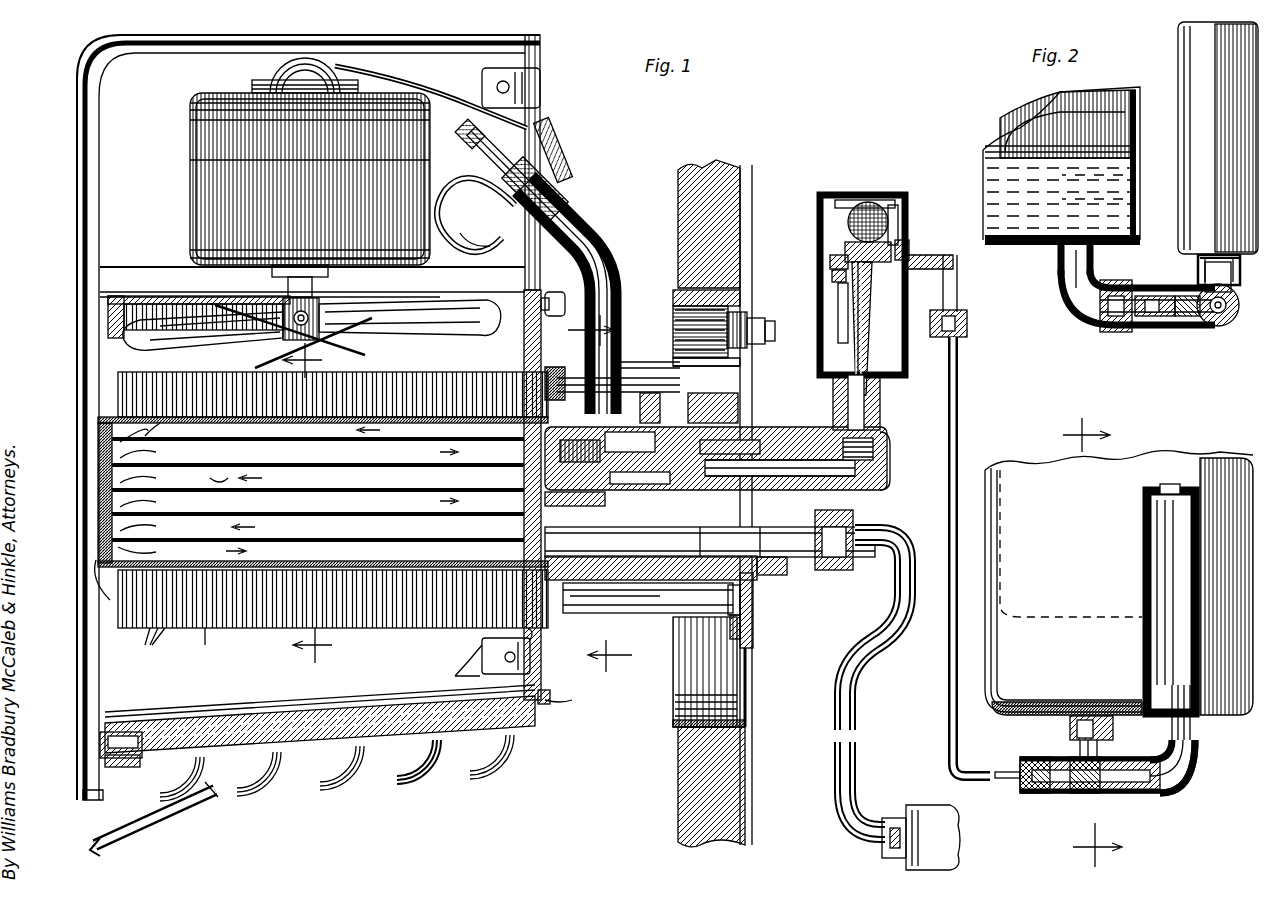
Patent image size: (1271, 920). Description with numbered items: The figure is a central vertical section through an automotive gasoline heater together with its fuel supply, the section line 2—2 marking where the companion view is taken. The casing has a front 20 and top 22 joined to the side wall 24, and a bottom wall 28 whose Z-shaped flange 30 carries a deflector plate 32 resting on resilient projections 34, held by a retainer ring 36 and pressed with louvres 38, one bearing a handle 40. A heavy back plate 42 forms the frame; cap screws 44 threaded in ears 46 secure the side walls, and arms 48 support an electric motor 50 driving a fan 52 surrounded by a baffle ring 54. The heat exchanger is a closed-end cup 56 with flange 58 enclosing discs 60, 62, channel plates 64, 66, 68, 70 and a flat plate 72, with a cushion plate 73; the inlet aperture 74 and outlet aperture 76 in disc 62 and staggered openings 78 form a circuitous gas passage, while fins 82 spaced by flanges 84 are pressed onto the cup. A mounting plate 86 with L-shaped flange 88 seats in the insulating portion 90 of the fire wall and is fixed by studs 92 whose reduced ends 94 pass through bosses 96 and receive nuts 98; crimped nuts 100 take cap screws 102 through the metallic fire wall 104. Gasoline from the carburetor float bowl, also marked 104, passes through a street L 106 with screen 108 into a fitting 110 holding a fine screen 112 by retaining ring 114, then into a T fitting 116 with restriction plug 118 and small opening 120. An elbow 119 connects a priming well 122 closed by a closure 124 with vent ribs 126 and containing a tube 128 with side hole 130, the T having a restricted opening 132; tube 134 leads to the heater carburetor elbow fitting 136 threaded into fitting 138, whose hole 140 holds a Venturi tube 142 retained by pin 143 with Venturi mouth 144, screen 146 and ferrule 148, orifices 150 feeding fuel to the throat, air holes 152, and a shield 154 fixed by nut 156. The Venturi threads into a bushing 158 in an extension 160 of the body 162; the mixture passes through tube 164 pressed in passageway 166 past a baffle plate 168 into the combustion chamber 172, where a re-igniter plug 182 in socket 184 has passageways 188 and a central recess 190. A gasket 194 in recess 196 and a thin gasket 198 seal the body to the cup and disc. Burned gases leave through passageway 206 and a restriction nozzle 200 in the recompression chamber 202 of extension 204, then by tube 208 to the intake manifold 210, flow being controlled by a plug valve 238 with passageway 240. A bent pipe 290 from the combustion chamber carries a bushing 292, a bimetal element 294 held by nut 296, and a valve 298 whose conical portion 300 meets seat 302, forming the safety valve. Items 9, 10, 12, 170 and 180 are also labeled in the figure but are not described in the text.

In FIG. 1, the section line 9 is at (605, 493).
In FIG. 1, the air flow direction 10 is at (320, 503).
In FIG. 1, the housing wall 12 is at (543, 686).
In FIG. 1, the front 20 is at (100, 482).
In FIG. 1, the top 22 is at (183, 45).
In FIG. 1, the side wall 24 is at (82, 590).
In FIG. 1, the bottom wall 28 is at (558, 710).
In FIG. 1, the Z-shaped flange 30 is at (126, 762).
In FIG. 1, the circular deflector plate 32 is at (160, 732).
In FIG. 1, the resilient projections 34 is at (318, 696).
In FIG. 1, the retainer ring 36 is at (112, 734).
In FIG. 1, the louvres 38 is at (367, 790).
In FIG. 1, the handle 40 is at (165, 828).
In FIG. 1, the back plate 42 is at (545, 367).
In FIG. 1, the cap screws 44 is at (465, 100).
In FIG. 1, the ears 46 is at (540, 74).
In FIG. 1, the arms 48 is at (312, 282).
In FIG. 1, the electric motor 50 is at (210, 216).
In FIG. 1, the fan 52 is at (158, 305).
In FIG. 1, the flanged baffle ring 54 is at (112, 298).
In FIG. 1, the closed end tube 56 is at (114, 432).
In FIG. 1, the flange 58 is at (526, 630).
In FIG. 1, the disc 60 is at (210, 527).
In FIG. 1, the disc 62 is at (510, 475).
In FIG. 1, the channel-shaped plate 64 is at (330, 431).
In FIG. 1, the channel-shaped plate 66 is at (291, 454).
In FIG. 1, the channel-shaped plate 68 is at (291, 503).
In FIG. 1, the channel-shaped plate 70 is at (291, 527).
In FIG. 1, the flat plate 72 is at (270, 478).
In FIG. 1, the cushion plate 73 is at (197, 478).
In FIG. 1, the inlet aperture 74 is at (508, 427).
In FIG. 1, the outlet aperture 76 is at (512, 547).
In FIG. 1, the openings 78 is at (114, 455).
In FIG. 1, the heat radiating fins 82 is at (158, 542).
In FIG. 1, the flanges 84 is at (215, 542).
In FIG. 1, the mounting plate 86 is at (752, 660).
In FIG. 1, the peripheral L-shaped flange 88 is at (673, 288).
In FIG. 1, the sound and heat insulating portion 90 is at (673, 270).
In FIG. 1, the studs 92 is at (700, 622).
In FIG. 1, the threaded ends 94 is at (752, 622).
In FIG. 1, the bosses 96 is at (752, 640).
In FIG. 1, the nuts 98 is at (755, 606).
In FIG. 1, the nuts 100 is at (735, 300).
In FIG. 1, the cap screws 102 is at (770, 320).
In FIG. 1, the metallic fire wall 104 is at (742, 214).
In FIG. 2, the metallic fire wall 104 is at (1050, 250).
In FIG. 2, the street L 106 is at (1062, 300).
In FIG. 2, the screen 108 is at (1062, 268).
In FIG. 2, the fitting 110 is at (1115, 335).
In FIG. 2, the fine mesh screen 112 is at (1108, 330).
In FIG. 2, the retaining ring 114 is at (1152, 320).
In FIG. 2, the T fitting 116 is at (1230, 325).
In FIG. 2, the flow restriction plug 118 is at (1185, 328).
In FIG. 2, the elbow 119 is at (1198, 268).
In FIG. 2, the small opening 120 is at (1235, 325).
In FIG. 2, the priming well 122 is at (1180, 175).
In FIG. 2, the closure 124 is at (1143, 488).
In FIG. 2, the ribs 126 is at (1150, 500).
In FIG. 2, the tube 128 is at (1172, 690).
In FIG. 2, the hole 130 is at (1170, 705).
In FIG. 2, the restricted opening 132 is at (1160, 780).
In FIG. 1, the tube 134 is at (952, 678).
In FIG. 1, the fuel receiving elbow fitting 136 is at (968, 326).
In FIG. 1, the fitting 138 is at (832, 256).
In FIG. 1, the diametral hole 140 is at (840, 300).
In FIG. 1, the Venturi tube 142 is at (852, 330).
In FIG. 1, the pin 143 is at (834, 272).
In FIG. 1, the Venturi mouth 144 is at (876, 205).
In FIG. 1, the fine mesh screen 146 is at (840, 200).
In FIG. 1, the flanged ferrule 148 is at (898, 215).
In FIG. 1, the orifices 150 is at (885, 245).
In FIG. 1, the holes 152 is at (856, 352).
In FIG. 1, the shield 154 is at (900, 198).
In FIG. 1, the nut 156 is at (908, 248).
In FIG. 1, the bushing 158 is at (882, 396).
In FIG. 1, the extension 160 is at (880, 440).
In FIG. 1, the body 162 is at (648, 424).
In FIG. 1, the tube 164 is at (760, 470).
In FIG. 1, the passageway 166 is at (885, 470).
In FIG. 1, the baffle plate 168 is at (720, 426).
In FIG. 1, the pump rotor 170 is at (655, 492).
In FIG. 1, the combustion chamber 172 is at (711, 405).
In FIG. 1, the inlet 180 is at (608, 527).
In FIG. 1, the re-igniter plug 182 is at (625, 452).
In FIG. 1, the socket 184 is at (608, 512).
In FIG. 1, the longitudinally extending passageways 188 is at (599, 482).
In FIG. 1, the recess 190 is at (670, 462).
In FIG. 1, the gasket 194 is at (570, 630).
In FIG. 1, the recess 196 is at (572, 378).
In FIG. 1, the thin gasket 198 is at (510, 525).
In FIG. 1, the restriction nozzle 200 is at (752, 590).
In FIG. 1, the recompression chamber 202 is at (772, 576).
In FIG. 1, the extension 204 is at (832, 520).
In FIG. 1, the passageway 206 is at (640, 560).
In FIG. 1, the tube 208 is at (906, 530).
In FIG. 1, the intake manifold 210 is at (948, 824).
In FIG. 1, the rotating plug valve 238 is at (640, 612).
In FIG. 1, the passageway 240 is at (648, 598).
In FIG. 1, the bent pipe 290 is at (622, 252).
In FIG. 1, the bushing 292 is at (550, 192).
In FIG. 1, the U-shaped bimetal thermostatic element 294 is at (485, 246).
In FIG. 1, the nut 296 is at (560, 158).
In FIG. 1, the valve 298 is at (522, 152).
In FIG. 1, the conically shaped portion 300 is at (540, 178).
In FIG. 1, the seat 302 is at (473, 215).
In FIG. 2, the section line 2 is at (1077, 642).